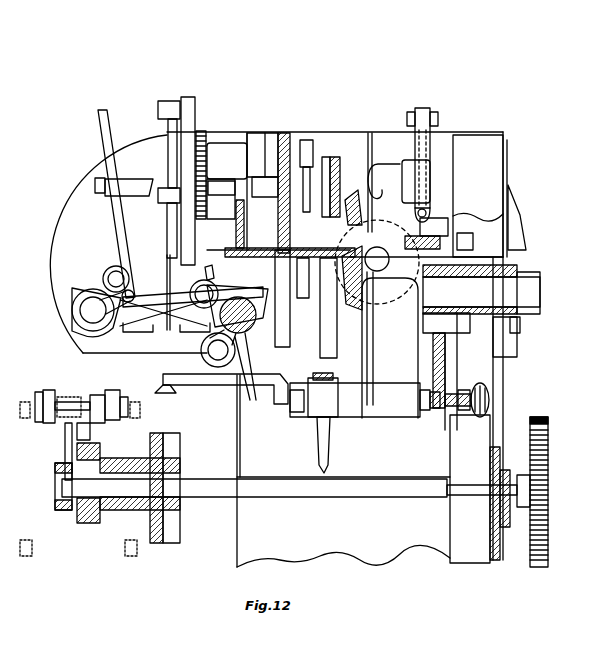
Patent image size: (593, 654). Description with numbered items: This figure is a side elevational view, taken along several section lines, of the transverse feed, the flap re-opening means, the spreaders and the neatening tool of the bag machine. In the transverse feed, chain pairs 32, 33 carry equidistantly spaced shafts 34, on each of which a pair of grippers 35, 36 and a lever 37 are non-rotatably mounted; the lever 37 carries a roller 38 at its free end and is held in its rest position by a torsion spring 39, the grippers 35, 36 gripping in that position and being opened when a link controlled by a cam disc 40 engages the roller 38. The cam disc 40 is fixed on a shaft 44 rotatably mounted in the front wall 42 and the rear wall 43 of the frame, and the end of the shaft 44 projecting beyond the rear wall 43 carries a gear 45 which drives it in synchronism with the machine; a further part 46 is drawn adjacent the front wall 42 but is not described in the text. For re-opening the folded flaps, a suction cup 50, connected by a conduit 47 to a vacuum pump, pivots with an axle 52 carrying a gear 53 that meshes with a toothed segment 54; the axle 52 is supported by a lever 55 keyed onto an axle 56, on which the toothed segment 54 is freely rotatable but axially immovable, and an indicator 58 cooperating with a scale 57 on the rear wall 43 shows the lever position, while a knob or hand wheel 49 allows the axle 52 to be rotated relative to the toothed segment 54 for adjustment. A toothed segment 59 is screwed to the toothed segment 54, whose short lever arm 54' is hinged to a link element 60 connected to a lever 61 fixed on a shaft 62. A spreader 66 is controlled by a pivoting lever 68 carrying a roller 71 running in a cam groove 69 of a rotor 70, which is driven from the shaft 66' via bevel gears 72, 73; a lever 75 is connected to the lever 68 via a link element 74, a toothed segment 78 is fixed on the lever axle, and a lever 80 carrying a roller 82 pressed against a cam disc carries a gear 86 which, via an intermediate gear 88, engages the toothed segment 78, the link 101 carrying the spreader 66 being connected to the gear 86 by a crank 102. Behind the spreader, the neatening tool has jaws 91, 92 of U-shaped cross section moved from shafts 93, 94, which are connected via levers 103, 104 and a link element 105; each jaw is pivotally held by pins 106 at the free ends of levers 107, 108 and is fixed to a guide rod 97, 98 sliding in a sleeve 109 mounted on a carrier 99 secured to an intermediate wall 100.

The chain pair 32 is at (25, 408).
The chain pair 33 is at (138, 410).
The shaft 34 is at (72, 407).
The gripper 35 is at (50, 394).
The gripper 36 is at (112, 394).
The lever 37 is at (98, 400).
The roller 38 is at (86, 418).
The torsion spring 39 is at (68, 400).
The cam disc 40 is at (68, 527).
The front wall 42 is at (177, 517).
The rear wall 43 is at (477, 547).
The shaft 44 is at (367, 488).
The gear 45 is at (540, 553).
The plate 46 is at (68, 430).
The conduit 47 is at (320, 447).
The knob or hand wheel 49 is at (477, 420).
The suction cup 50 is at (203, 380).
The axle 52 is at (425, 417).
The gear 53 is at (437, 418).
The toothed segment 54 is at (471, 371).
The short lever arm 54' is at (391, 259).
The lever 55 is at (388, 372).
The axle 56 is at (500, 283).
The scale 57 is at (508, 183).
The indicator 58 is at (512, 220).
The toothed segment 59 is at (462, 221).
The link element 60 is at (431, 114).
The lever 61 is at (423, 108).
The shaft 62 is at (396, 170).
The spreader 66 is at (151, 290).
The shaft 66' is at (385, 121).
The pivoting lever 68 is at (307, 297).
The cam groove 69 is at (325, 160).
The rotor 70 is at (336, 160).
The roller 71 is at (330, 310).
The bevel gear 72 is at (366, 215).
The bevel gear 73 is at (352, 205).
The link element 74 is at (287, 172).
The lever 75 is at (305, 153).
The toothed segment 78 is at (170, 223).
The lever 80 is at (228, 153).
The roller 82 is at (242, 230).
The gear 86 is at (202, 133).
The intermediate gear 88 is at (205, 178).
The jaw 91 is at (143, 330).
The jaw 92 is at (202, 352).
The shaft 93 is at (240, 322).
The shaft 94 is at (93, 323).
The guide rod 97 is at (113, 218).
The guide rod 98 is at (213, 277).
The carrier 99 is at (127, 178).
The intermediate wall 100 is at (283, 177).
The link 101 is at (174, 157).
The crank 102 is at (181, 107).
The lever 103 is at (240, 340).
The lever 104 is at (100, 287).
The link element 105 is at (143, 290).
The pin 106 is at (113, 270).
The lever 107 is at (265, 313).
The lever 108 is at (80, 305).
The sleeve 109 is at (107, 187).